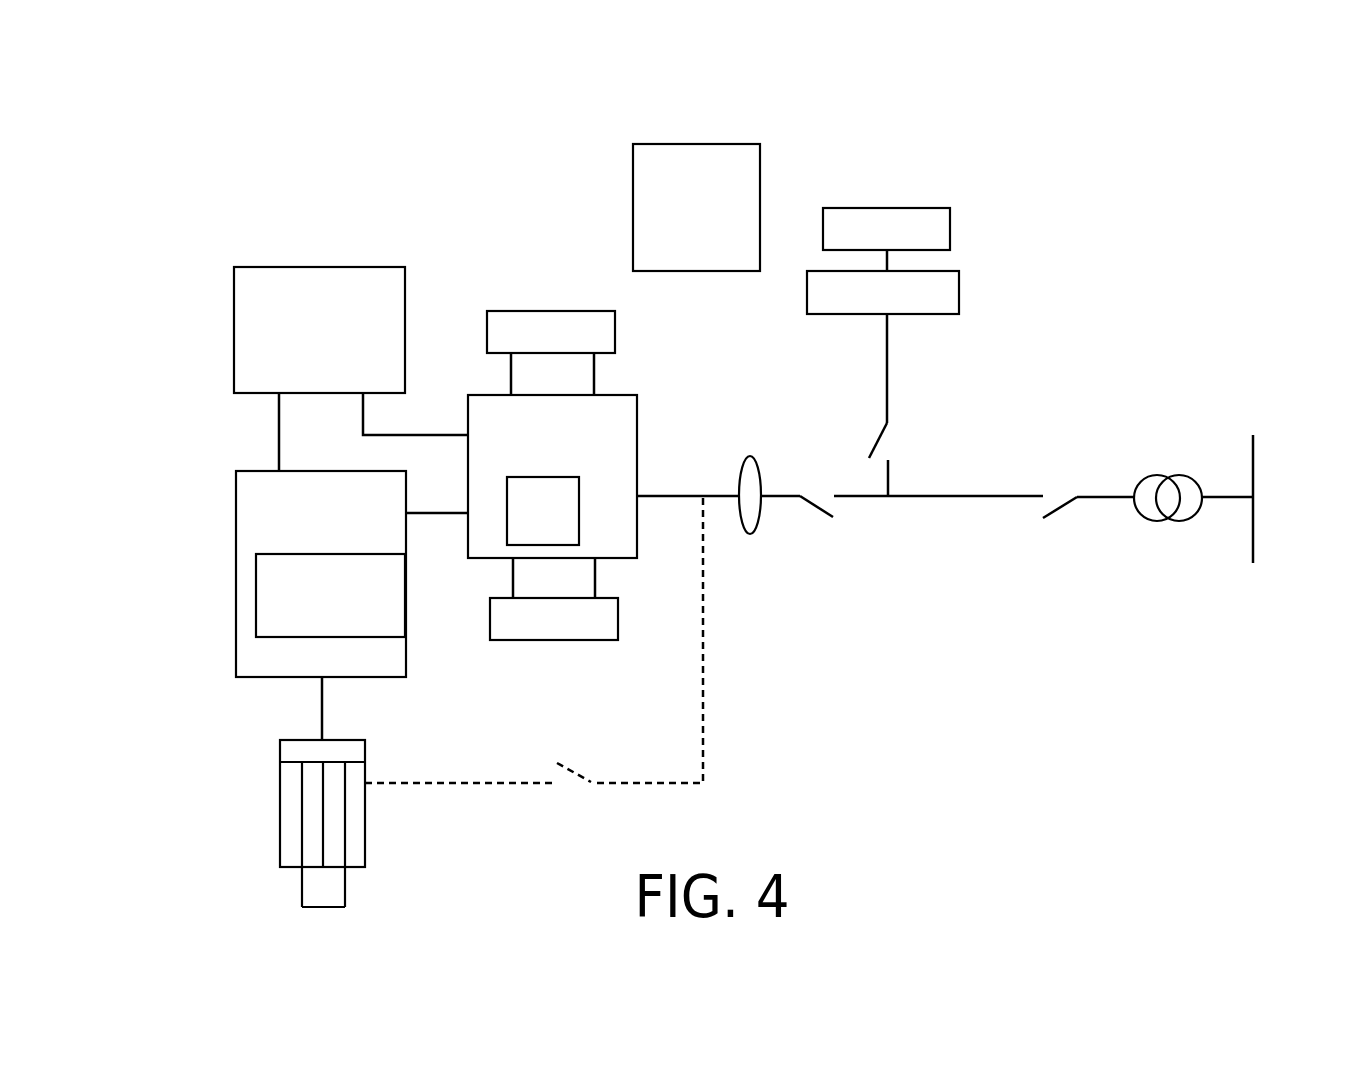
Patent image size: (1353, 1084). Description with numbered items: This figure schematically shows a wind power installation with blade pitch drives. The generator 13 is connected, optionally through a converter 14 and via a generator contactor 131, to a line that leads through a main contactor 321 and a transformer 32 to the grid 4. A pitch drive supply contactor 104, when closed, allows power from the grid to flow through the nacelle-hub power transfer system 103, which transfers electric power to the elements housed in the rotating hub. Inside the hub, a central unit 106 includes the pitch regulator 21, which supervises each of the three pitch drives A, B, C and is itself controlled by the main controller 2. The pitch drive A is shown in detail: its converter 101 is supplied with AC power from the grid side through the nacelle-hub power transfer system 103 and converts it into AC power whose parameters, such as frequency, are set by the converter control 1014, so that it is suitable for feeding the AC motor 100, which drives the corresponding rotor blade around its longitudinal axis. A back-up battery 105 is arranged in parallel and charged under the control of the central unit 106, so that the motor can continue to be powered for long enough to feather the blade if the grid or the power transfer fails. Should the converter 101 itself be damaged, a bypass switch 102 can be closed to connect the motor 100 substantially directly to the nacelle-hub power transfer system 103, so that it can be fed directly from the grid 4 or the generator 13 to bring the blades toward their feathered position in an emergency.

The pitch drive A is at (212, 287).
The pitch drive B is at (535, 322).
The pitch drive C is at (576, 625).
The main controller 2 is at (683, 163).
The grid 4 is at (1253, 543).
The generator 13 is at (932, 230).
The electrical converter 14 is at (946, 292).
The pitch regulator 21 is at (543, 511).
The transformer 32 is at (1148, 485).
The AC motor 100 is at (290, 818).
The converter 101 is at (252, 659).
The bypass switch 102 is at (572, 777).
The nacelle-hub power transfer system 103 is at (750, 522).
The pitch drive supply contactor 104 is at (817, 510).
The back-up battery 105 is at (322, 282).
The central unit 106 is at (632, 415).
The generator contactor 131 is at (883, 448).
The main contactor 321 is at (1062, 508).
The converter control 1014 is at (282, 577).